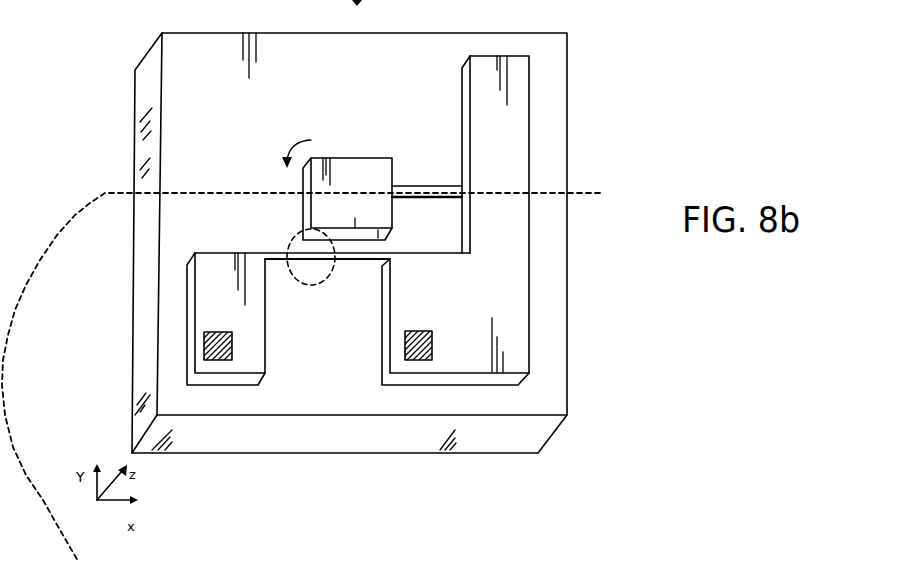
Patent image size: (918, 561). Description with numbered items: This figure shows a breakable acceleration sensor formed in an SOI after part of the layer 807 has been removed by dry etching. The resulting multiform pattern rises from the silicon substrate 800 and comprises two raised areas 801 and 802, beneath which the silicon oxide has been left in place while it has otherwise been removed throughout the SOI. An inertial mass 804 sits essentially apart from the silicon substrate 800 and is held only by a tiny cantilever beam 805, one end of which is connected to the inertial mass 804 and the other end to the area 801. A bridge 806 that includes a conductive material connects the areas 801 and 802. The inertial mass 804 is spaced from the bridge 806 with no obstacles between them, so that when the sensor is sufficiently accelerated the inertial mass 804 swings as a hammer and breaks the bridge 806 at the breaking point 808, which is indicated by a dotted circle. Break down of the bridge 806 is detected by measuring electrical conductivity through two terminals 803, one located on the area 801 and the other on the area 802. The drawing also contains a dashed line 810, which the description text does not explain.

The silicon substrate 800 is at (207, 445).
The area 801 is at (515, 208).
The area 802 is at (212, 293).
The terminals 803 is at (232, 338).
The inertial mass 804 is at (357, 167).
The cantilever beam 805 is at (425, 185).
The bridge 806 is at (352, 266).
The layer 807 is at (522, 388).
The breaking point 808 is at (284, 230).
The section line 810 is at (599, 184).